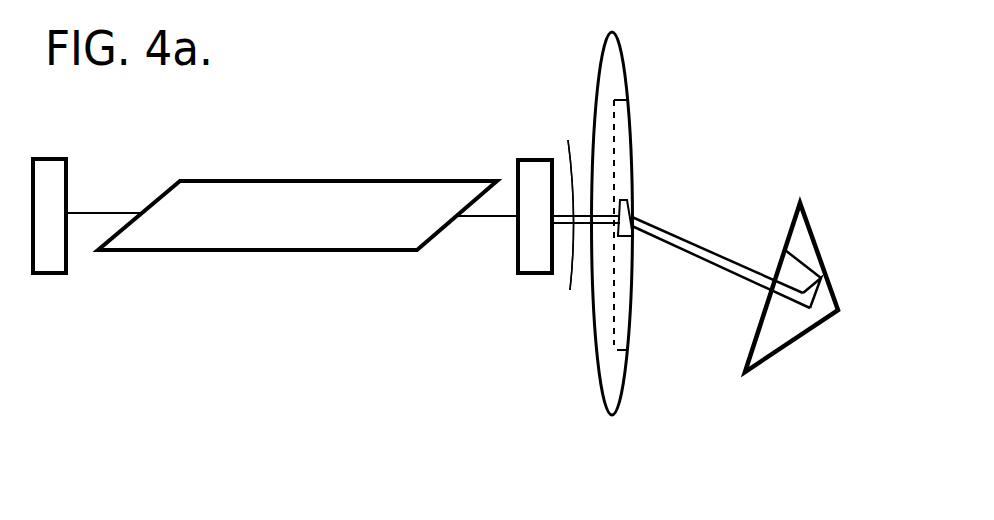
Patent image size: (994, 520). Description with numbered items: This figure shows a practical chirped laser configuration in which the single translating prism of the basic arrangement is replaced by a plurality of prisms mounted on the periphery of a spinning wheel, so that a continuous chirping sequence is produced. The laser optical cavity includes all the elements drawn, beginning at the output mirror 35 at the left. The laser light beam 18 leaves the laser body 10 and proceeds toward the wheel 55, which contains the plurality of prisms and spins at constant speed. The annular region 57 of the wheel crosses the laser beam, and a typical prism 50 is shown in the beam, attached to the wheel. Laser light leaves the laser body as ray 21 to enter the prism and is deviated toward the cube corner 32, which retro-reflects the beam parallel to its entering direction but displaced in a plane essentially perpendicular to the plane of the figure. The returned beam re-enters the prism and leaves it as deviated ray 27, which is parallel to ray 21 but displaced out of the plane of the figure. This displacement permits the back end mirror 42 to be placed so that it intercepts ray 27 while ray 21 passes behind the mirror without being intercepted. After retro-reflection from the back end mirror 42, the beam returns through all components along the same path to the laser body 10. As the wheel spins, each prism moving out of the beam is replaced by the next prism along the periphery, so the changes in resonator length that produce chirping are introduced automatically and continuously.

The output mirror 35 is at (67, 158).
The laser light beam 18 is at (97, 213).
The laser body 10 is at (362, 253).
The back end mirror 42 is at (519, 273).
The ray 21 is at (570, 203).
The ray 27 is at (576, 232).
The wheel 55 is at (592, 125).
The annular region 57 is at (628, 138).
The prism 50 is at (632, 200).
The cube corner 32 is at (828, 258).